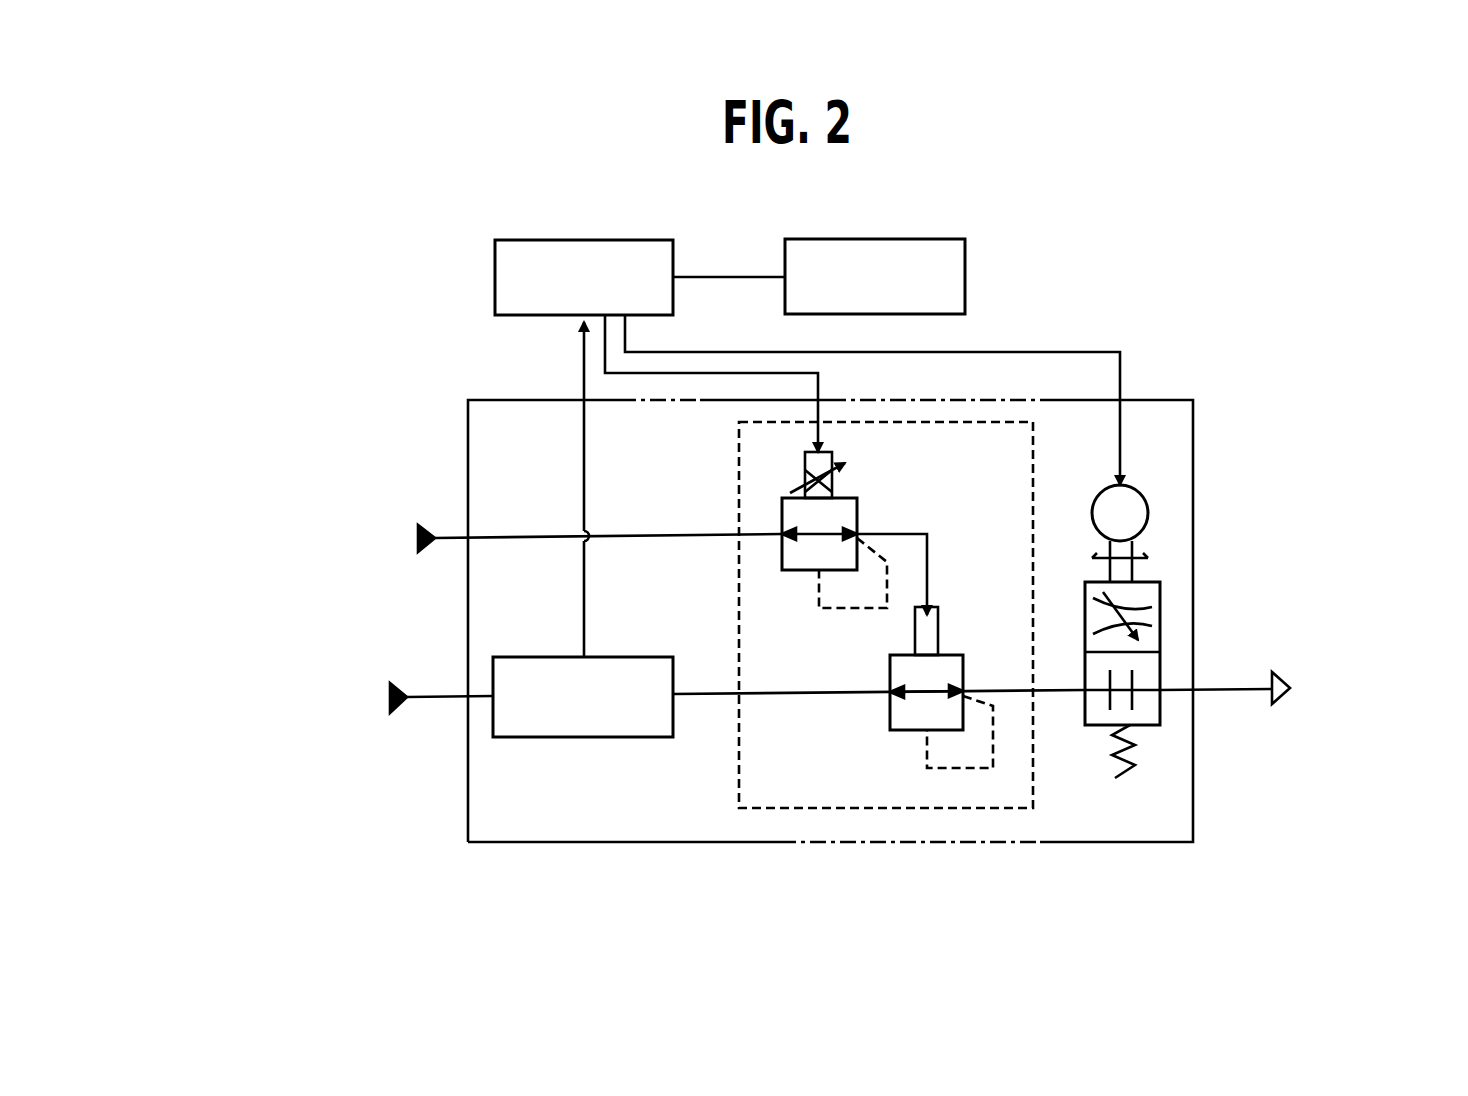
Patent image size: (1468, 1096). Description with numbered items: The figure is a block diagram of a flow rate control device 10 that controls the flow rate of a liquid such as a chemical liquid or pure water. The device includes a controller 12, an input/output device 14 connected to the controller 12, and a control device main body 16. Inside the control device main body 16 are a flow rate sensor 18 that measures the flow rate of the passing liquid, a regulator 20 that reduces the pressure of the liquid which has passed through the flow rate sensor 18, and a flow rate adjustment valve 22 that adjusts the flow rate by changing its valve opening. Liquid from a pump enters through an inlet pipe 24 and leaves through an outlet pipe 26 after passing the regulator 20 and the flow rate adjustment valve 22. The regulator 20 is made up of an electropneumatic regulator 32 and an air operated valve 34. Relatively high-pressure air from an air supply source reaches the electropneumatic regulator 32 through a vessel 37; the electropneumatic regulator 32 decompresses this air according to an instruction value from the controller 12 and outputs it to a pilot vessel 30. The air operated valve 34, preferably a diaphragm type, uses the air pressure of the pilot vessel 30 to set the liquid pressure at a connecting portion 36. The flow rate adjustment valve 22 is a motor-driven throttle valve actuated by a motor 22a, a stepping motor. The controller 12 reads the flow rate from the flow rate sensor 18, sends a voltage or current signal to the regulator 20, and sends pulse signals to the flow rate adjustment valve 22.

The flow rate control device 10 is at (1140, 224).
The controller 12 is at (640, 238).
The input/output device 14 is at (940, 238).
The control device main body 16 is at (1158, 398).
The flow rate sensor 18 is at (637, 656).
The regulator 20 is at (1036, 441).
The flow rate adjustment valve 22 is at (1160, 600).
The motor 22a is at (1148, 500).
The inlet pipe 24 is at (447, 700).
The outlet pipe 26 is at (1243, 692).
The pilot vessel 30 is at (928, 565).
The electropneumatic regulator 32 is at (858, 499).
The air operated valve 34 is at (964, 656).
The connecting portion 36 is at (1053, 692).
The vessel 37 is at (448, 535).